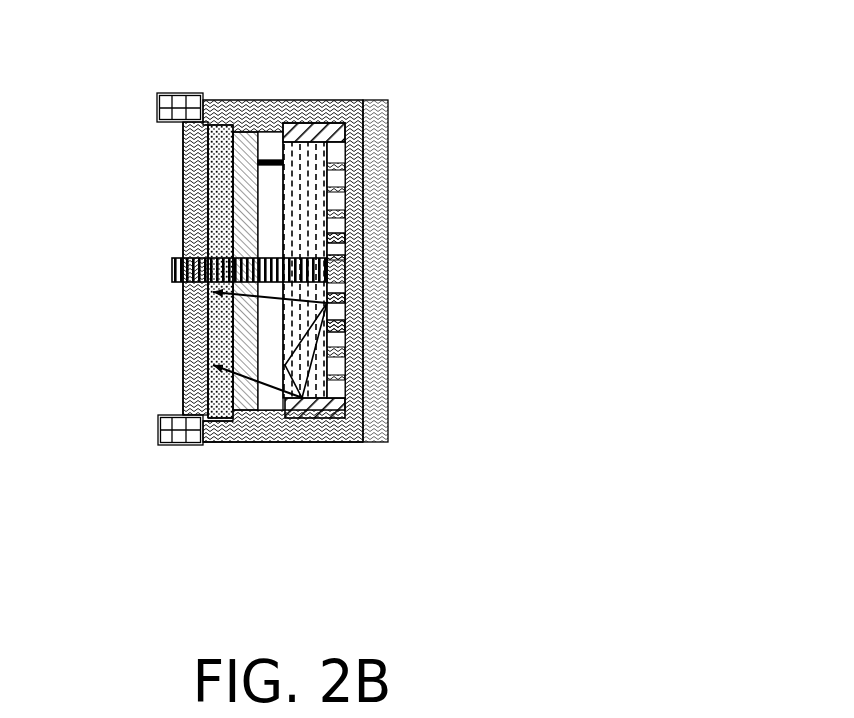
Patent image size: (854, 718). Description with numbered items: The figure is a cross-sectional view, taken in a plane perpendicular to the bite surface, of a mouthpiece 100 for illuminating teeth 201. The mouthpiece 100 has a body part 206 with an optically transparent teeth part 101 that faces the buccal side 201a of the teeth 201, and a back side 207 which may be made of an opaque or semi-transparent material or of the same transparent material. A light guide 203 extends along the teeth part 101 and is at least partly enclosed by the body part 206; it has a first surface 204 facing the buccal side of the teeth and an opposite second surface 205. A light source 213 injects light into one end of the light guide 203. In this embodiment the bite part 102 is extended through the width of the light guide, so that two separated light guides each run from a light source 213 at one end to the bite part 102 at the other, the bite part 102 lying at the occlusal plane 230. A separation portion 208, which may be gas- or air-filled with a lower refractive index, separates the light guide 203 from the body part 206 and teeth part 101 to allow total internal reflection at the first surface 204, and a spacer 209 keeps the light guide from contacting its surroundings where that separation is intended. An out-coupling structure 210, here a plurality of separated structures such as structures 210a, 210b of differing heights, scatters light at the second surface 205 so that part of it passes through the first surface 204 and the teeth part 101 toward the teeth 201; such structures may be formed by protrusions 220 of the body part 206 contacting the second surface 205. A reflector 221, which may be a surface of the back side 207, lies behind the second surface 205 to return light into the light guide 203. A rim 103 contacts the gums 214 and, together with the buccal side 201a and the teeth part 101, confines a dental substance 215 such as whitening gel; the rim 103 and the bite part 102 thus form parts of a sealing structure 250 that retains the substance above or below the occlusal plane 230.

The mouthpiece 100 is at (147, 65).
The optically transparent teeth part 101 is at (251, 150).
The bite part 102 is at (185, 257).
The rim 103 is at (240, 235).
The teeth 201 is at (208, 365).
The buccal side of the teeth 201a is at (205, 333).
The light guide 203 is at (303, 180).
The first surface 204 is at (222, 197).
The second surface 205 is at (335, 228).
The body part 206 is at (375, 98).
The back side 207 is at (340, 392).
The separation portion 208 is at (207, 175).
The spacer 209 is at (271, 152).
The out-coupling structure 210 is at (340, 307).
The out-coupling structure 210a is at (340, 240).
The out-coupling structure 210b is at (338, 262).
The light source 213 is at (338, 118).
The gums 214 is at (178, 433).
The dental substance 215 is at (207, 400).
The protrusion 220 is at (340, 327).
The reflector 221 is at (370, 360).
The occlusal plane 230 is at (420, 270).
The sealing structure 250 is at (247, 442).